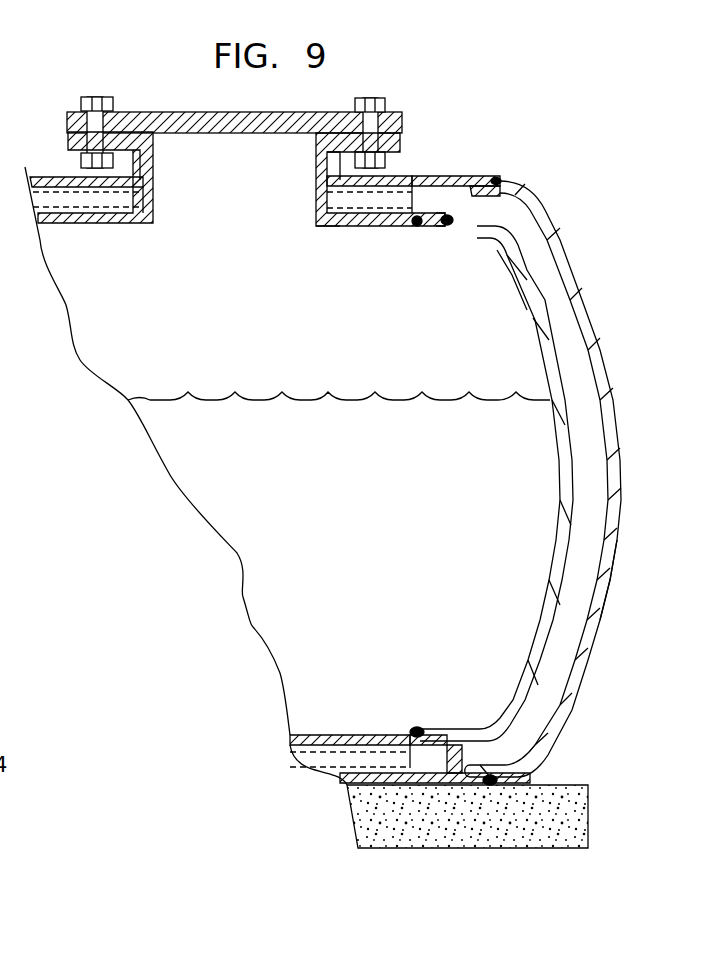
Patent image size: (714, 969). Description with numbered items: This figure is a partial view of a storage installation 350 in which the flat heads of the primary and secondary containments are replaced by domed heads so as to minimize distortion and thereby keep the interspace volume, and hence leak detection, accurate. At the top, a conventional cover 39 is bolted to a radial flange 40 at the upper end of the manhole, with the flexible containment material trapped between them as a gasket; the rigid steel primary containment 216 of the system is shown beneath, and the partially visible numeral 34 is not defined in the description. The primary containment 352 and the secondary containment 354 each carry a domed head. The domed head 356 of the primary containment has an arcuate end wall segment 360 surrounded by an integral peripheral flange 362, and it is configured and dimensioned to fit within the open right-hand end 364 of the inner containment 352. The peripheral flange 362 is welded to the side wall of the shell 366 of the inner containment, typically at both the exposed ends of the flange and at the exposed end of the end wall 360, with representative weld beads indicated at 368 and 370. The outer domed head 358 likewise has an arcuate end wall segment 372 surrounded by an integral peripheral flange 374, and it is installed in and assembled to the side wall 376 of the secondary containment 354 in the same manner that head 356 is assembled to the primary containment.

The cover 39 is at (147, 112).
The radial flange 40 is at (400, 148).
The rigid primary containment 216 is at (50, 177).
The pool wall section 34 is at (9, 553).
The installation 350 is at (485, 100).
The primary containment 352 is at (112, 210).
The secondary containment 354 is at (460, 165).
The domed head 356 is at (567, 327).
The outer domed head 358 is at (625, 380).
The arcuate end wall segment 360 is at (570, 497).
The peripheral flange 362 is at (462, 740).
The open right-hand end 364 is at (470, 213).
The shell 366 is at (330, 227).
The bead 368 is at (443, 224).
The bead 370 is at (412, 228).
The arcuate end wall segment 372 is at (612, 573).
The peripheral flange 374 is at (510, 777).
The side wall 376 is at (350, 788).